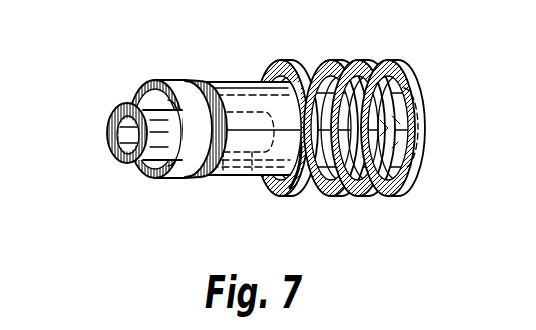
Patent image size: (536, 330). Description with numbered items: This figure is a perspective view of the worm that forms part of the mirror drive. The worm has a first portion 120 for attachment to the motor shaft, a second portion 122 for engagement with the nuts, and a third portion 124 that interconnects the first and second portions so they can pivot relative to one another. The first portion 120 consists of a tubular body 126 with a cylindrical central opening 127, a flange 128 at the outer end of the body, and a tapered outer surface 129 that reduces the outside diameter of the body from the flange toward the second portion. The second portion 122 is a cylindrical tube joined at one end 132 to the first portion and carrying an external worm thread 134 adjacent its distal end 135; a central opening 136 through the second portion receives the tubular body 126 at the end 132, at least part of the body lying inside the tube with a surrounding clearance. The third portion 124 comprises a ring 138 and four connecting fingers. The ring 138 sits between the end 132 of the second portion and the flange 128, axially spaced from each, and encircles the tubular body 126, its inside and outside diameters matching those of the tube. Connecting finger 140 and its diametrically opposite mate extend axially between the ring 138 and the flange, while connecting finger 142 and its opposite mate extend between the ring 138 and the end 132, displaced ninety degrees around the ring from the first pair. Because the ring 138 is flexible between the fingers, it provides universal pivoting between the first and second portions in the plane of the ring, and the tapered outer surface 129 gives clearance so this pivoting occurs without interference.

The first portion 120 is at (113, 101).
The second portion 122 is at (246, 77).
The third portion 124 is at (158, 187).
The tubular body 126 is at (226, 108).
The cylindrical central opening 127 is at (130, 136).
The flange 128 is at (112, 157).
The tapered outer surface 129 is at (269, 198).
The end 132 is at (183, 81).
The external worm thread 134 is at (346, 196).
The distal end 135 is at (415, 168).
The central opening 136 is at (421, 130).
The ring 138 is at (140, 176).
The connecting finger 140 is at (163, 108).
The connecting finger 142 is at (172, 179).